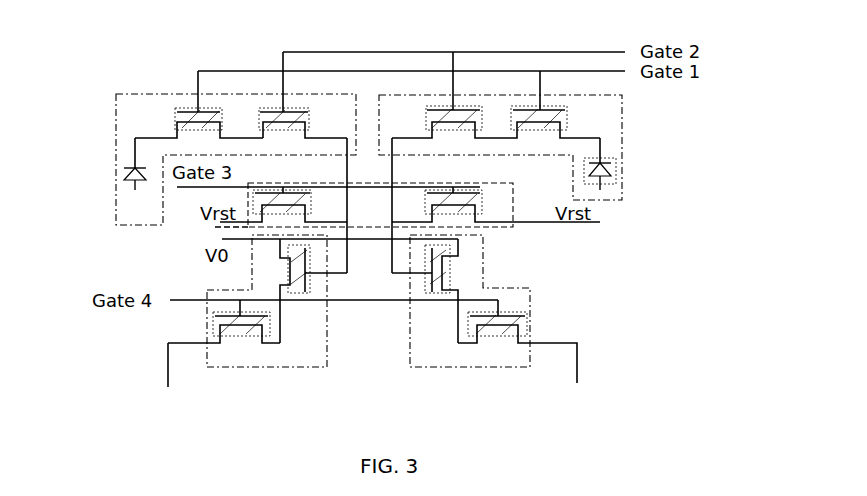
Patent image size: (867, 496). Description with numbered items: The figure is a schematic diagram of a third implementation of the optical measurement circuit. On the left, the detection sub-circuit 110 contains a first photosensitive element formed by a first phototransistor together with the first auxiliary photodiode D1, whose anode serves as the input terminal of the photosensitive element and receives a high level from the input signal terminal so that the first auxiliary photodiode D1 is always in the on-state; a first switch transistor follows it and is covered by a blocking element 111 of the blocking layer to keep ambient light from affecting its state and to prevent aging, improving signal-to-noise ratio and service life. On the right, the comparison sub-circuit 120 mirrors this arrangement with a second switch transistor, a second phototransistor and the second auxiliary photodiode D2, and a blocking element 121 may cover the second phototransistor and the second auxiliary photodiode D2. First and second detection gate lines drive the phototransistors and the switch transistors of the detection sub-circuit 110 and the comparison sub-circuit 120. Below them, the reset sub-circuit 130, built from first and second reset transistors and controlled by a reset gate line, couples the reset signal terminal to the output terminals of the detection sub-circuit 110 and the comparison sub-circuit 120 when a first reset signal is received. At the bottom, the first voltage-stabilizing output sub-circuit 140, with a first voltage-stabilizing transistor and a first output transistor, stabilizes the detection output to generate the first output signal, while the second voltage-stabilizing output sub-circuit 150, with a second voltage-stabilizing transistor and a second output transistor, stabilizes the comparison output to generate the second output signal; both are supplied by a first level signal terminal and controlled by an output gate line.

The detection sub-circuit 110 is at (202, 134).
The blocking element 111 is at (272, 108).
The comparison sub-circuit 120 is at (550, 117).
The blocking element 121 is at (574, 117).
The reset sub-circuit 130 is at (513, 227).
The first voltage-stabilizing output sub-circuit 140 is at (303, 368).
The second voltage-stabilizing output sub-circuit 150 is at (483, 265).
The first auxiliary photodiode D1 is at (122, 178).
The second auxiliary photodiode D2 is at (585, 166).